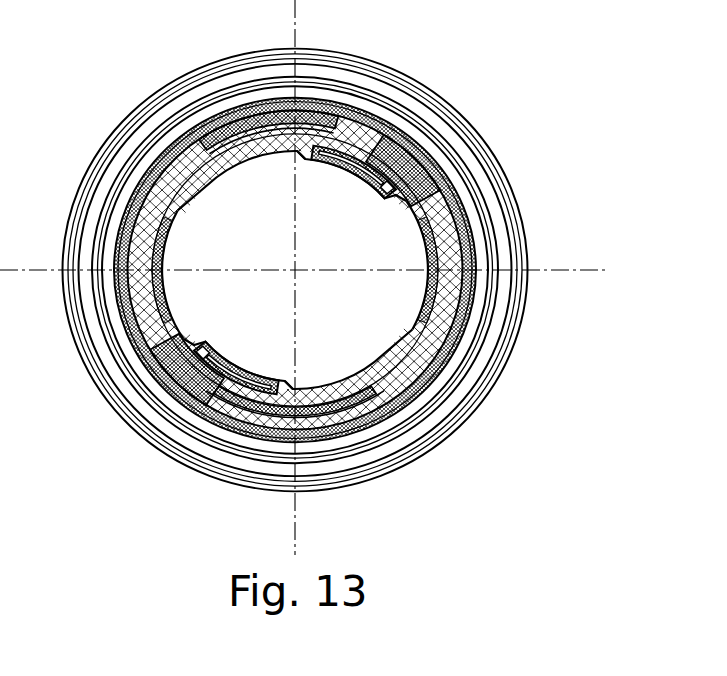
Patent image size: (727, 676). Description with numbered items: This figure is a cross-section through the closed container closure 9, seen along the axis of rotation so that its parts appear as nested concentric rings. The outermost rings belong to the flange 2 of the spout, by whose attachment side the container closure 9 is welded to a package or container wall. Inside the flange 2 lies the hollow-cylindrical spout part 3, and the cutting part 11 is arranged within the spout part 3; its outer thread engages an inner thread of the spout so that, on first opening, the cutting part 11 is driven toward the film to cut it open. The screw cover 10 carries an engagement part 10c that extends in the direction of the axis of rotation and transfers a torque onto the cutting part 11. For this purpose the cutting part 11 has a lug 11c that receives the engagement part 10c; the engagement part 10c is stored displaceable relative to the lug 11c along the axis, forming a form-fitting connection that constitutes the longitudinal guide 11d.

The container closure 9 is at (471, 99).
The flange 2 is at (497, 205).
The spout part 3 is at (462, 291).
The screw cover 10 is at (433, 162).
The engagement part 10c is at (350, 168).
The cutting part 11 is at (306, 147).
The lug 11c is at (365, 157).
The longitudinal guide 11d is at (397, 203).